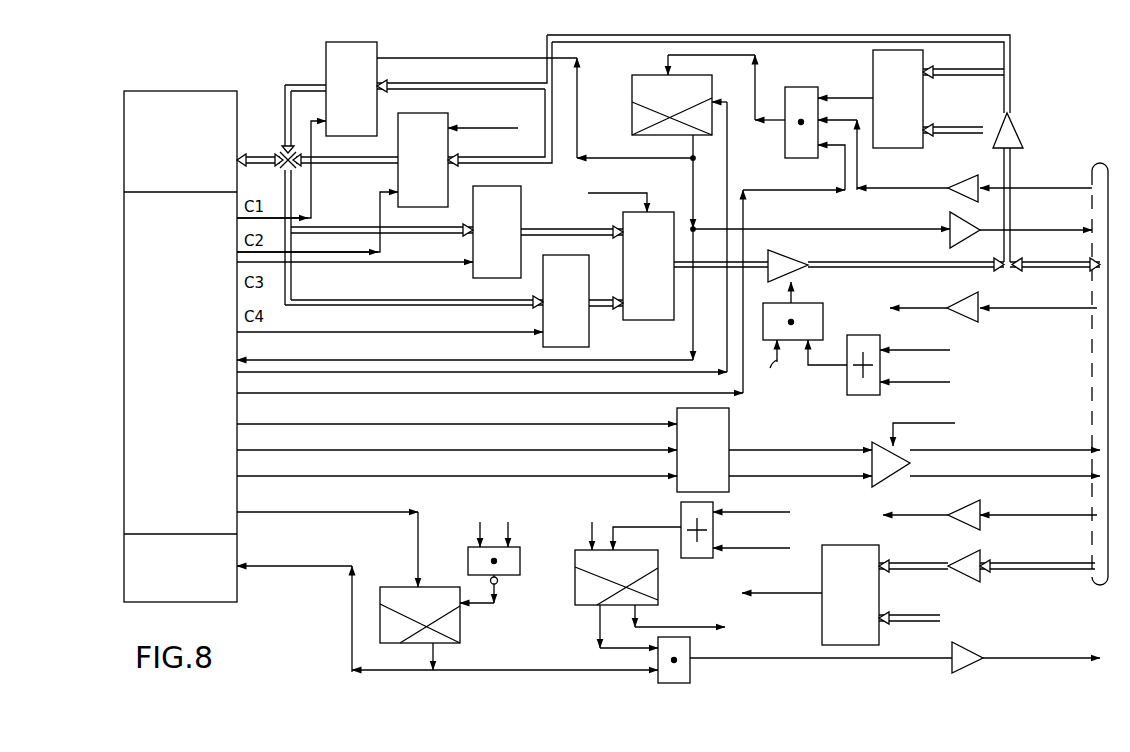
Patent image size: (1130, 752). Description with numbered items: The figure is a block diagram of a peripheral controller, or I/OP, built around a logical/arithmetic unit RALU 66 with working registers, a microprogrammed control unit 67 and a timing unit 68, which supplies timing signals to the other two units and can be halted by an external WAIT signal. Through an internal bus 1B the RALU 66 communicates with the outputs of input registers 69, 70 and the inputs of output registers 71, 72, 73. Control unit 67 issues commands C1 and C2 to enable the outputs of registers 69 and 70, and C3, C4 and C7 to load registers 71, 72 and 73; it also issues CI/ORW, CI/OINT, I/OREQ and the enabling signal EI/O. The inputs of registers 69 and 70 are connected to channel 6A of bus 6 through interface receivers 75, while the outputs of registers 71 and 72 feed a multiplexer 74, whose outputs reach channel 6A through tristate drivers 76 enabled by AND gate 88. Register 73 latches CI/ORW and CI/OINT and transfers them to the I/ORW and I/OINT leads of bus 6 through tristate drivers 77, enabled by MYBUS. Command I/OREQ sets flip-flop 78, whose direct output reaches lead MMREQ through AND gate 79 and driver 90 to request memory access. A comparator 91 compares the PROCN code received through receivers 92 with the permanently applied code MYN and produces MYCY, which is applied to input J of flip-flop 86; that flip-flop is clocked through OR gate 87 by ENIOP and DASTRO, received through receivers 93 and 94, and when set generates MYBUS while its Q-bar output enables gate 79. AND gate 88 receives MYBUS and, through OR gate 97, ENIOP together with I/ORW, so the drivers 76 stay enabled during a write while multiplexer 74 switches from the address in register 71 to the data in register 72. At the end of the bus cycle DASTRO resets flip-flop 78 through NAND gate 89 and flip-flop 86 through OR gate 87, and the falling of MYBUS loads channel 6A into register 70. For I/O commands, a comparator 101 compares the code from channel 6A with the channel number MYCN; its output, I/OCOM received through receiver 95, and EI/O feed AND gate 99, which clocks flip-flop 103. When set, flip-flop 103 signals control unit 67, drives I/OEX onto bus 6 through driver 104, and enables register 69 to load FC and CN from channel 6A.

The RALU 66 is at (208, 90).
The control unit 67 is at (237, 523).
The timing unit 68 is at (237, 580).
The input register 69 is at (326, 62).
The internal bus 1B is at (264, 157).
The input register 70 is at (398, 178).
The output register 71 is at (518, 187).
The output register 72 is at (589, 292).
The output register 73 is at (729, 430).
The multiplexer 74 is at (646, 322).
The interface receivers 75 is at (1022, 138).
The tristate interface drivers 76 is at (795, 258).
The tristate interface drivers 77 is at (890, 445).
The flip-flop 78 is at (398, 586).
The AND gate 79 is at (690, 672).
The flip-flop 86 is at (575, 598).
The OR gate 87 is at (707, 558).
The AND gate 88 is at (823, 322).
The NAND gate 89 is at (520, 561).
The interface driver 90 is at (972, 648).
The comparator 91 is at (822, 618).
The interface receivers 92 is at (963, 556).
The interface receiver 93 is at (975, 506).
The interface receiver 94 is at (985, 320).
The interface receiver 95 is at (958, 178).
The OR gate 97 is at (848, 394).
The AND gate 99 is at (800, 87).
The comparator 101 is at (873, 74).
The flip-flop 103 is at (632, 78).
The driver 104 is at (948, 222).
The bus 6 is at (1098, 163).
The channel 6A is at (1060, 260).